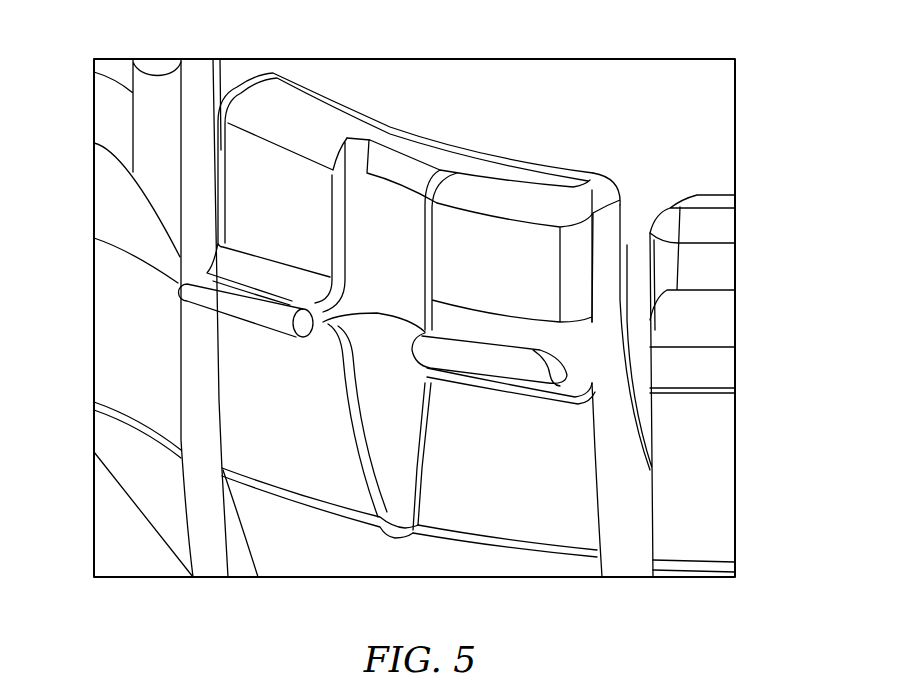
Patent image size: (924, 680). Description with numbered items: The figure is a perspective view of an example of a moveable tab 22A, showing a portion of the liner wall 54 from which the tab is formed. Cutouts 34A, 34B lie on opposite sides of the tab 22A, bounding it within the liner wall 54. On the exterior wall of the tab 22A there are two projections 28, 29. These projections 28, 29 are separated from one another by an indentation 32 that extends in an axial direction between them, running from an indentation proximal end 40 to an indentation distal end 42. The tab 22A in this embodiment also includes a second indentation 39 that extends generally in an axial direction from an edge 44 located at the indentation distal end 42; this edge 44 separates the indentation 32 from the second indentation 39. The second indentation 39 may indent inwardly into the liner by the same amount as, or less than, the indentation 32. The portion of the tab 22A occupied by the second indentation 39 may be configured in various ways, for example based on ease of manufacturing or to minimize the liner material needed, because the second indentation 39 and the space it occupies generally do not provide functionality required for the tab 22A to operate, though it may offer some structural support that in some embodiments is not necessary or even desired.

The moveable tab 22A is at (327, 98).
The projection 28 is at (200, 282).
The projection 29 is at (587, 345).
The indentation 32 is at (400, 157).
The cutout 34A is at (652, 186).
The cutout 34B is at (234, 76).
The second indentation 39 is at (393, 483).
The indentation proximal end 40 is at (400, 195).
The indentation distal end 42 is at (382, 315).
The edge 44 is at (352, 315).
The liner wall 54 is at (621, 455).